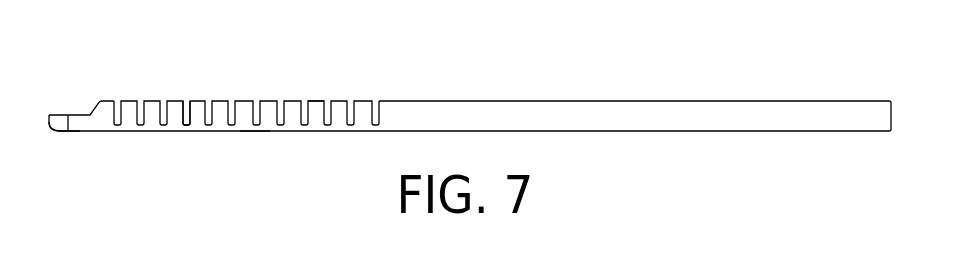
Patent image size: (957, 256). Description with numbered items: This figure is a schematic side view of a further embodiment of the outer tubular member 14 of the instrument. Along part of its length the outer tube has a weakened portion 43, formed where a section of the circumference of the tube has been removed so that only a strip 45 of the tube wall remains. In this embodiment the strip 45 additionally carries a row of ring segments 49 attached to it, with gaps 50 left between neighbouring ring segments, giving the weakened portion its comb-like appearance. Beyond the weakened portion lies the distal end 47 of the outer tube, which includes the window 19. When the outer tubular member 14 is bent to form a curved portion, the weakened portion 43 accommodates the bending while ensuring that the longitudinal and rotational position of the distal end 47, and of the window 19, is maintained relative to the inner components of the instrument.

The outer tubular member 14 is at (700, 131).
The window 19 is at (78, 115).
The weakened portion 43 is at (218, 82).
The strip 45 is at (255, 131).
The distal end 47 is at (73, 148).
The ring segments 49 is at (307, 101).
The gaps 50 is at (182, 112).